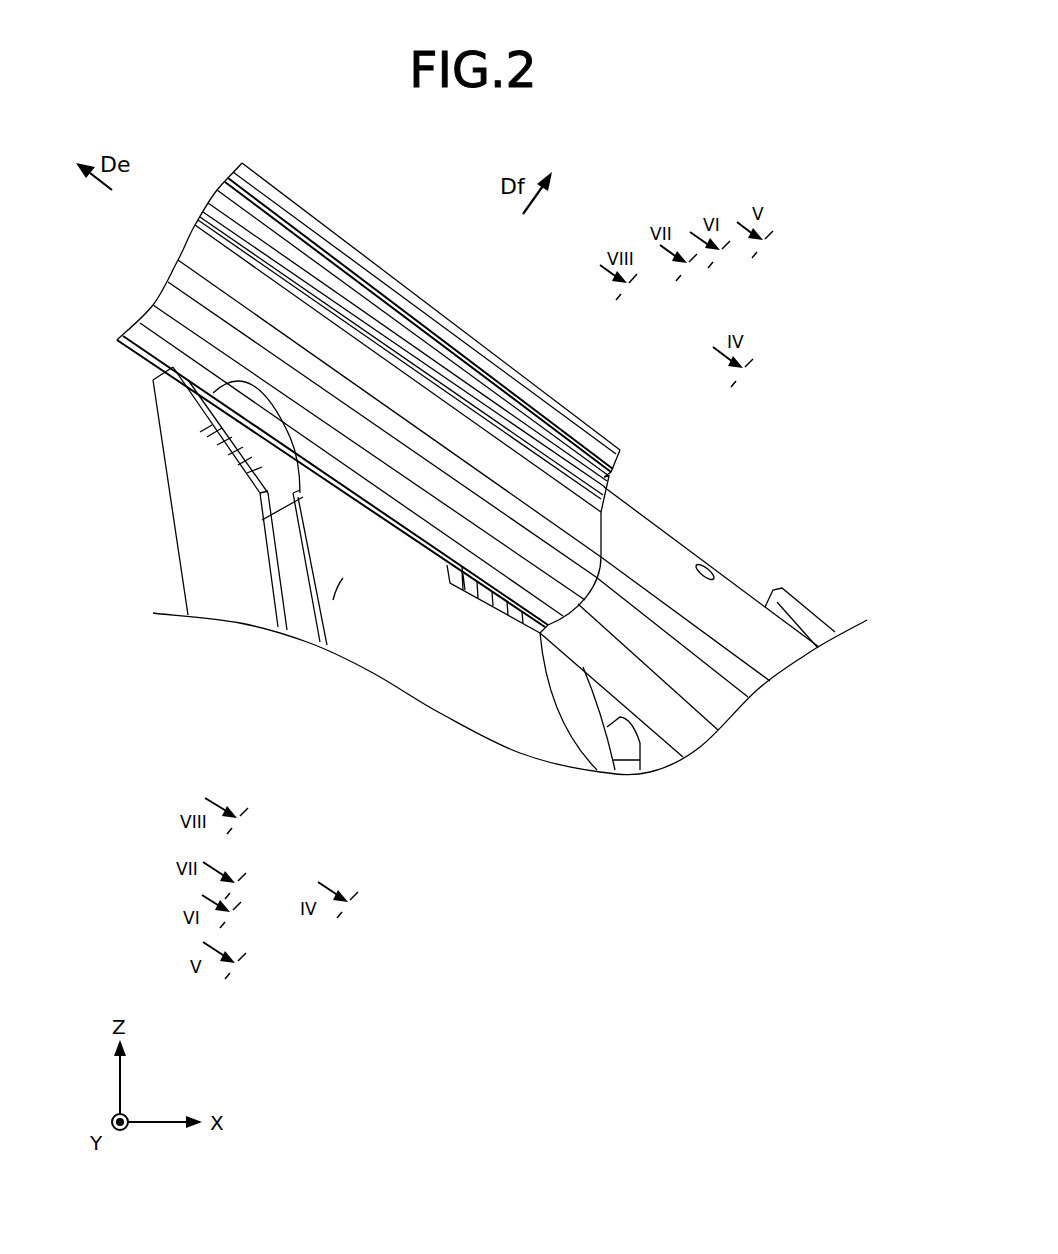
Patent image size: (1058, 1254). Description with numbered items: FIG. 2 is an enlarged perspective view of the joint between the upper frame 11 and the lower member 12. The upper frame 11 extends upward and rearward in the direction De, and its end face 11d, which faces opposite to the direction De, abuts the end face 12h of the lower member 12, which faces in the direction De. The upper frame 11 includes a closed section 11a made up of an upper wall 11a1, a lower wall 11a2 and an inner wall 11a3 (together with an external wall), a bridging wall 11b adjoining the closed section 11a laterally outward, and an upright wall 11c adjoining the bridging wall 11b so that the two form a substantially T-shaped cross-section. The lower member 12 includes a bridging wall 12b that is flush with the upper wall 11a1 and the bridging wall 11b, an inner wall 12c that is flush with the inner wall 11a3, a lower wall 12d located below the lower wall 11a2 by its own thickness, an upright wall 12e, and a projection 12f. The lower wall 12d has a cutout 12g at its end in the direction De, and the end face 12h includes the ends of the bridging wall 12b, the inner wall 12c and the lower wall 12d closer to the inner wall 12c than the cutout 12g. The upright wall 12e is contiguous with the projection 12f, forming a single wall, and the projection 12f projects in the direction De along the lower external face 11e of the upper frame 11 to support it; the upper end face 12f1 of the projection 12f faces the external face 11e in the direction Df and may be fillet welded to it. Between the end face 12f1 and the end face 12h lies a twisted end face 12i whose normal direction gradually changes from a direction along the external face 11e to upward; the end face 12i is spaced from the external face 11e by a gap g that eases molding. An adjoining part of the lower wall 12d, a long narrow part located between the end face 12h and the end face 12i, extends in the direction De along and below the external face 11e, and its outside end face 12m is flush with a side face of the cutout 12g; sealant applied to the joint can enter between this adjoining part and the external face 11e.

The upper frame 11 is at (197, 216).
The closed section 11a is at (226, 260).
The upper wall 11a1 is at (292, 315).
The lower wall 11a2 is at (290, 437).
The inner wall 11a3 is at (213, 330).
The bridging wall 11b is at (368, 305).
The upright wall 11c is at (272, 212).
The end face 11d is at (603, 535).
The lower external face 11e is at (247, 467).
The lower member 12 is at (471, 593).
The bridging wall 12b is at (637, 535).
The inner wall 12c is at (622, 627).
The lower wall 12d is at (585, 665).
The upright wall 12e is at (527, 730).
The projection 12f is at (307, 640).
The upper end face 12f1 is at (227, 407).
The cutout 12g is at (585, 668).
The end face 12h is at (600, 513).
The end face 12i is at (452, 585).
The outside end face 12m is at (483, 602).
The gap g is at (470, 600).